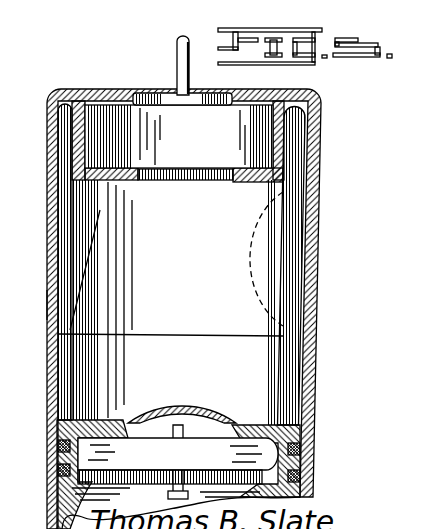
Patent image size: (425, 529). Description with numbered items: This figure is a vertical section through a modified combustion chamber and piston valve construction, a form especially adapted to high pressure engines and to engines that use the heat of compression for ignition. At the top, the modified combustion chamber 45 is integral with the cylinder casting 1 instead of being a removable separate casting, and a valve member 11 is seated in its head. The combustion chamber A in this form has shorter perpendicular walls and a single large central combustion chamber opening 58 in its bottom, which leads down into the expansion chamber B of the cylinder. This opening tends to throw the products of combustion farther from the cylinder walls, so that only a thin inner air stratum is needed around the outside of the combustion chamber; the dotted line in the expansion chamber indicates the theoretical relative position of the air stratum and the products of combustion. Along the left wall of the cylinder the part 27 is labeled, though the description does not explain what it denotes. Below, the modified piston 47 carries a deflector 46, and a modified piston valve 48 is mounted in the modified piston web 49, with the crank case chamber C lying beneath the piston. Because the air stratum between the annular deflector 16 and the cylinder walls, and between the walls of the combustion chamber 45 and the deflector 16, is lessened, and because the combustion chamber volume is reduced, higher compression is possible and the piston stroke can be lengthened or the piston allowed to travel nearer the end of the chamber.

The cylinder casting 1 is at (47, 305).
The valve member 11 is at (174, 105).
The annular deflector 16 is at (303, 353).
The insulating liner 27 is at (152, 264).
The modified combustion chamber 45 is at (283, 167).
The deflector 46 is at (196, 335).
The modified piston 47 is at (56, 424).
The modified piston valve 48 is at (191, 412).
The modified piston web 49 is at (135, 476).
The combustion chamber opening 58 is at (192, 180).
The combustion chamber A is at (179, 136).
The expansion chamber B is at (176, 302).
The crank case chamber C is at (65, 505).